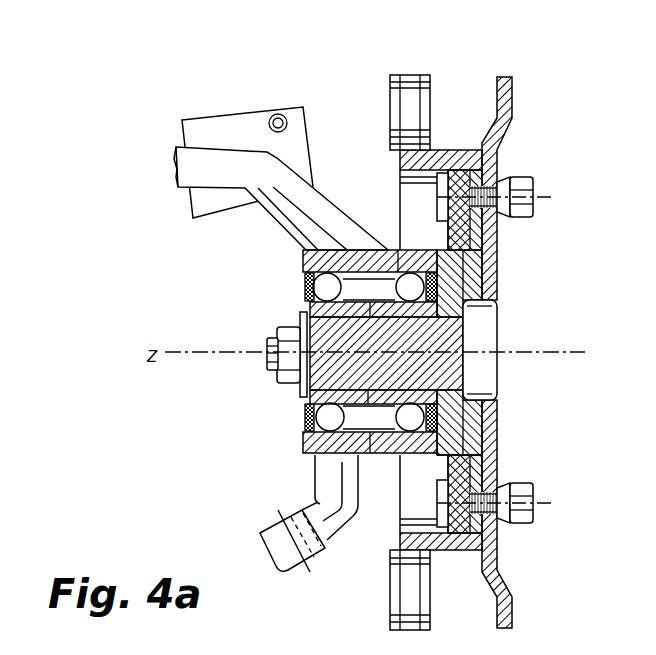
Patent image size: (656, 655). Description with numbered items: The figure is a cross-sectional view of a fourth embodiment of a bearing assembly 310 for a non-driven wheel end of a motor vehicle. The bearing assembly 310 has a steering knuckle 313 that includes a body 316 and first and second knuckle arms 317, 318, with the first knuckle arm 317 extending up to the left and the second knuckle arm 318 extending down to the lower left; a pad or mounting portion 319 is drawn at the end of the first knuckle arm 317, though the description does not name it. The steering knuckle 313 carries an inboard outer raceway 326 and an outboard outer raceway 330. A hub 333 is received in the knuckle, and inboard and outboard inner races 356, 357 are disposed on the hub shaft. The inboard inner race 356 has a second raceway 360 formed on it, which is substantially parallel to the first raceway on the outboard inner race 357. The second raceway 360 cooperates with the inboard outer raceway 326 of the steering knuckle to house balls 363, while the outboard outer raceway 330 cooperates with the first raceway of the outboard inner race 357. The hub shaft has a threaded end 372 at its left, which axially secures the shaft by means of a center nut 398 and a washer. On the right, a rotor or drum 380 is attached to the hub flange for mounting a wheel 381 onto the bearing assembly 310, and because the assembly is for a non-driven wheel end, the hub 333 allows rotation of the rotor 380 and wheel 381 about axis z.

The bearing assembly 310 is at (134, 90).
The steering knuckle 313 is at (343, 193).
The body 316 is at (433, 258).
The first knuckle arm 317 is at (293, 227).
The second knuckle arm 318 is at (317, 502).
The pad 319 is at (254, 147).
The inboard outer raceway 326 is at (303, 287).
The outboard outer raceway 330 is at (452, 292).
The hub 333 is at (450, 388).
The inboard inner race 356 is at (305, 314).
The outboard inner race 357 is at (449, 351).
The second raceway 360 is at (303, 256).
The balls 363 is at (305, 296).
The threaded end 372 is at (267, 367).
The rotor or drum 380 is at (457, 150).
The wheel 381 is at (512, 88).
The center nut 398 is at (288, 378).